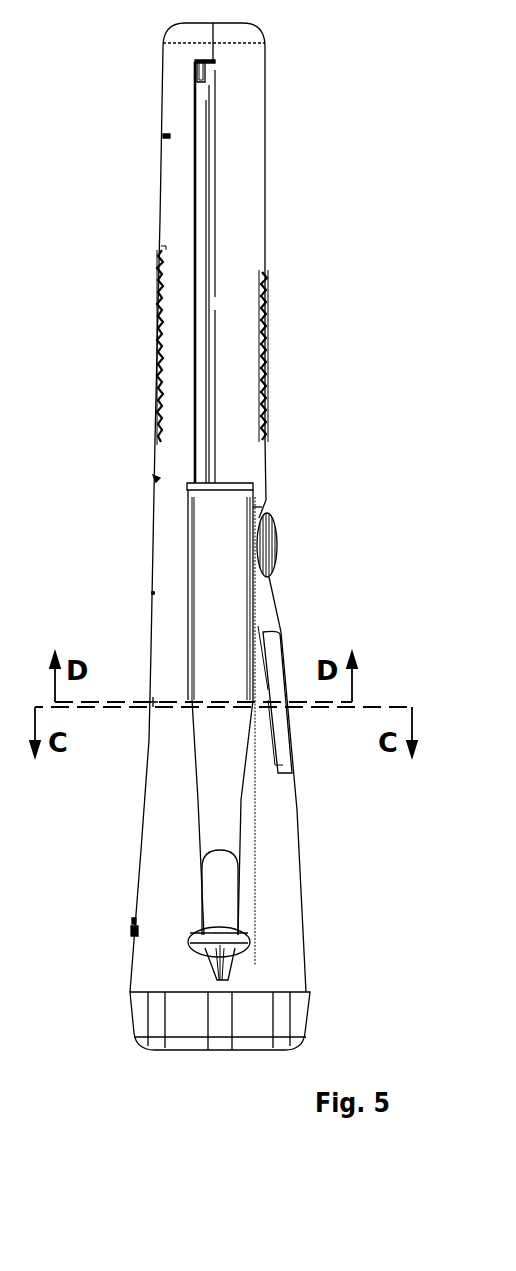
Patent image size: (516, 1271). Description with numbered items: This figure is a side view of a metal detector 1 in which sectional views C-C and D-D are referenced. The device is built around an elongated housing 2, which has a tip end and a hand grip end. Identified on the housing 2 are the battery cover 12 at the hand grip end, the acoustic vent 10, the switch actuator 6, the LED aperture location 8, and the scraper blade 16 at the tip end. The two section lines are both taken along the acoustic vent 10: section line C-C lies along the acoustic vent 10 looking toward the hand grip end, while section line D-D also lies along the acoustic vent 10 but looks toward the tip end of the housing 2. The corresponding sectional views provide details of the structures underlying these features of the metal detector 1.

The metal detector 1 is at (326, 321).
The housing 2 is at (152, 530).
The switch actuator 6 is at (277, 548).
The LED aperture location 8 is at (225, 483).
The acoustic vent 10 is at (292, 730).
The battery cover 12 is at (306, 1033).
The scraper blade 16 is at (195, 68).